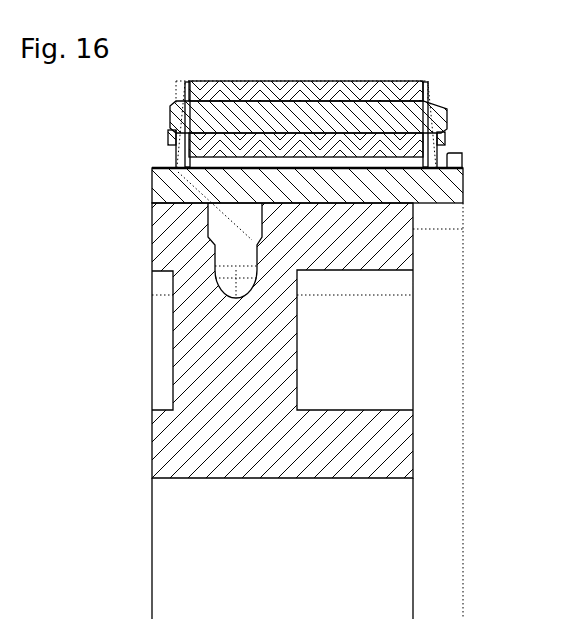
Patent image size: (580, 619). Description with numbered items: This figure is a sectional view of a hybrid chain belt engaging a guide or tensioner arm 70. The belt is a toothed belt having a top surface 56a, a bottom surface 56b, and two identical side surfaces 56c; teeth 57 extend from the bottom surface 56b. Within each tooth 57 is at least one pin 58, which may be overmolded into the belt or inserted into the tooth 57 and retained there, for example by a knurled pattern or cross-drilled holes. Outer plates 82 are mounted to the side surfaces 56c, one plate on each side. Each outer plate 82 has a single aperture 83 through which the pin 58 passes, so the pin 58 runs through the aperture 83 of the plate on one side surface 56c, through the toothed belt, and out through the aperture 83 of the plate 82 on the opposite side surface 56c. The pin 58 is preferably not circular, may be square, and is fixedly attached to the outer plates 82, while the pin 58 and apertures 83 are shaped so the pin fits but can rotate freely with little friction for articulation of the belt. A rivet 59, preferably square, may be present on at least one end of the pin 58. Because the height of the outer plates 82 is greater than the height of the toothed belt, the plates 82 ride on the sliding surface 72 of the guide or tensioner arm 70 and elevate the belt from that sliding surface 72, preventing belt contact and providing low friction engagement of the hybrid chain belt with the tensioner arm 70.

The tensioner arm or guide 70 is at (150, 258).
The top surface 56a is at (212, 82).
The bottom surface 56b is at (310, 158).
The side surface 56c is at (170, 130).
The tooth 57 is at (297, 90).
The pin 58 is at (418, 118).
The rivet 59 is at (443, 135).
The sliding surface 72 is at (167, 167).
The outer plate 82 is at (186, 90).
The aperture 83 is at (428, 103).